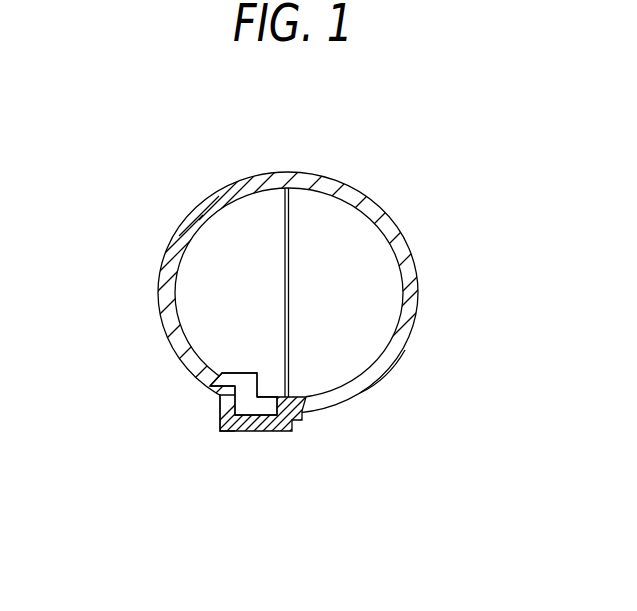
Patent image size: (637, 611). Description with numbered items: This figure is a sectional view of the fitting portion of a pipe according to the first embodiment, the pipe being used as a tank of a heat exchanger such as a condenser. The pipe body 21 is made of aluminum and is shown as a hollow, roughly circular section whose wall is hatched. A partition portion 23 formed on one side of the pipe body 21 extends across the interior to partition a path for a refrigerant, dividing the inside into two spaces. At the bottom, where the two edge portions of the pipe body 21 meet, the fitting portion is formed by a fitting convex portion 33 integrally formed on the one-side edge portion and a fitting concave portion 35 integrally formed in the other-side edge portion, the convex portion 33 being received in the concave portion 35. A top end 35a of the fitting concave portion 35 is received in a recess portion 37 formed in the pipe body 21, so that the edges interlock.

The pipe body 21 is at (385, 222).
The partition portion 23 is at (212, 288).
The fitting convex portion 33 is at (252, 432).
The fitting concave portion 35 is at (244, 458).
The top end 35a is at (220, 412).
The recess portion 37 is at (209, 390).